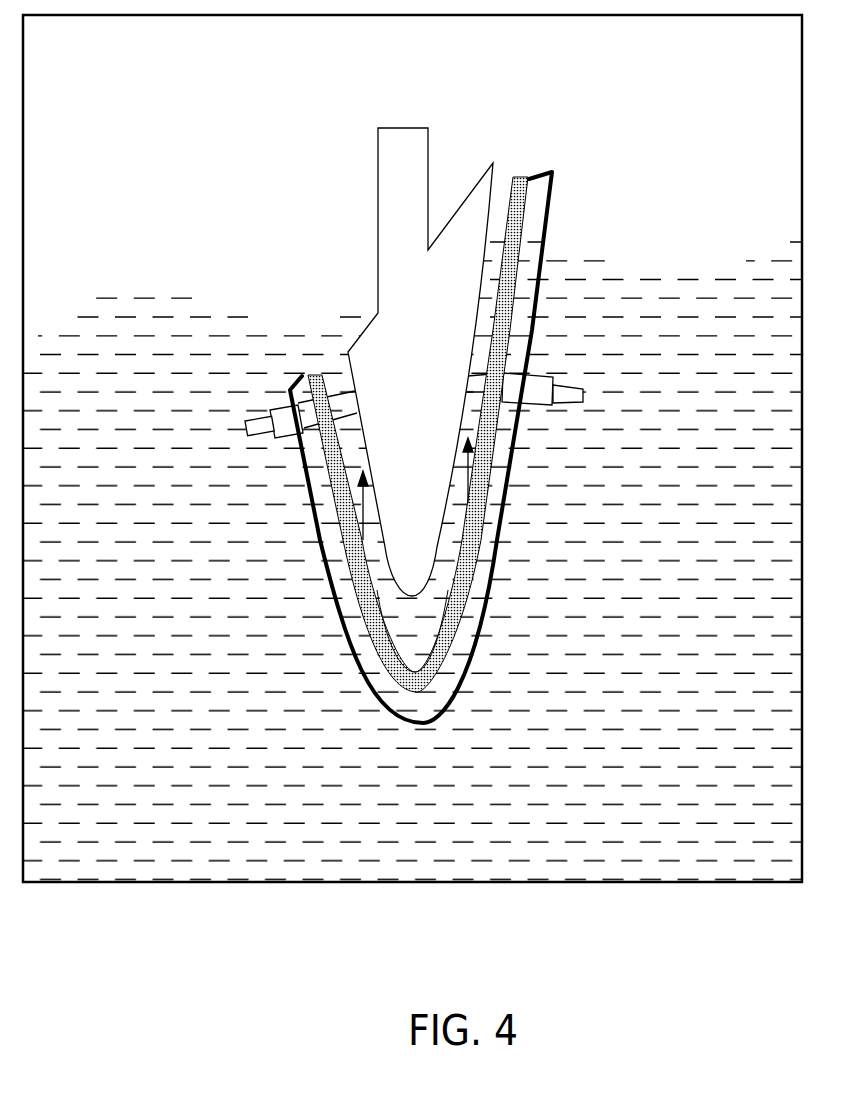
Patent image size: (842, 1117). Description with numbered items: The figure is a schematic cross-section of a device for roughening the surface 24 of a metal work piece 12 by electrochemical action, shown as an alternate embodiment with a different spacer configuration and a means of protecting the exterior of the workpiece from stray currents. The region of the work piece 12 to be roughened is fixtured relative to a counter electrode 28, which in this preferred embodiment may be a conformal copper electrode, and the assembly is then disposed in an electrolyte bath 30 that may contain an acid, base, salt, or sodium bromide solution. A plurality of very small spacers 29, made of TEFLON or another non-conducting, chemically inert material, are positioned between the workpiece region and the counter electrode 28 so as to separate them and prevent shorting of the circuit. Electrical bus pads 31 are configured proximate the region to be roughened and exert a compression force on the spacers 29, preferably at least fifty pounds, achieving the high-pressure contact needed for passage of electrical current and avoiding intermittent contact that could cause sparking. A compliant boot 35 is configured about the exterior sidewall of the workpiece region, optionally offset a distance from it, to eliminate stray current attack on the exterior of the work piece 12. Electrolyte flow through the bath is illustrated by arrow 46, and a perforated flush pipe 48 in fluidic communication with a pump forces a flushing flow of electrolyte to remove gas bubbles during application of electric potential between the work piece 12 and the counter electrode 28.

The work piece 12 is at (500, 418).
The surface 24 is at (415, 672).
The counter electrode 28 is at (392, 204).
The spacers 29 is at (345, 418).
The electrolyte bath 30 is at (708, 869).
The electrical bus pads 31 is at (262, 418).
The compliant boot 35 is at (493, 580).
The arrow 46 is at (346, 507).
The flush pipe 48 is at (477, 465).